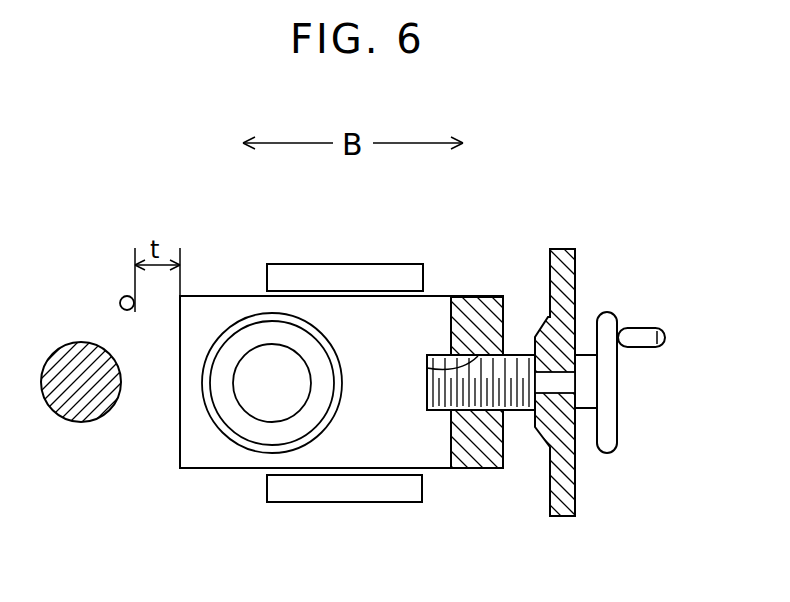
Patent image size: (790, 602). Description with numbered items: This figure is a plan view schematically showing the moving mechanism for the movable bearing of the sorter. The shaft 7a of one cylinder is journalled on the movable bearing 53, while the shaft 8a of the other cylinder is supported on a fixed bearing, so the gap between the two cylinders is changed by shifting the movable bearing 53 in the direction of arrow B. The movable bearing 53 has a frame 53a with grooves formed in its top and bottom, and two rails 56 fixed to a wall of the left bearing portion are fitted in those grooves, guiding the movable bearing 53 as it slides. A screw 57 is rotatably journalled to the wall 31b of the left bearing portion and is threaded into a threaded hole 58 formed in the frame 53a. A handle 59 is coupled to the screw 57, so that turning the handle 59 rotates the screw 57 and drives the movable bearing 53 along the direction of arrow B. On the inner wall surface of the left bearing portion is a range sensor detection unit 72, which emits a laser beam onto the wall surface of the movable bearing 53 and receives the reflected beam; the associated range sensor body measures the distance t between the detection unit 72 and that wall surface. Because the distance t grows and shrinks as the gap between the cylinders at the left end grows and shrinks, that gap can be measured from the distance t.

The movable bearing 53 is at (224, 296).
The frame of the movable bearing 53a is at (428, 308).
The rails 56 is at (347, 264).
The screw 57 is at (508, 367).
The threaded hole 58 is at (427, 368).
The wall of the left bearing portion 31b is at (577, 283).
The handle 59 is at (617, 418).
The shaft of the cylinder 7a is at (260, 418).
The shaft of the cylinder 8a is at (75, 423).
The range sensor detection unit 72 is at (120, 300).